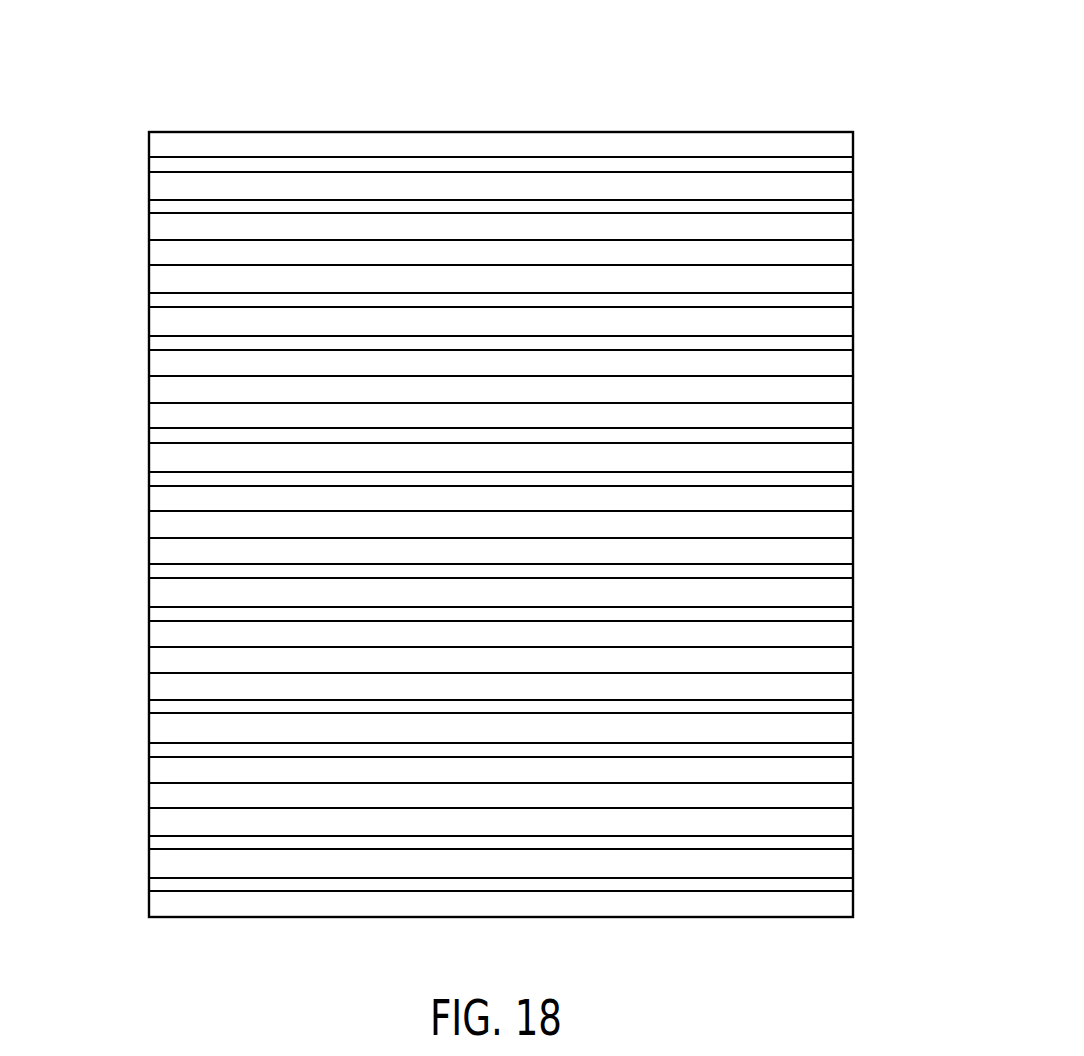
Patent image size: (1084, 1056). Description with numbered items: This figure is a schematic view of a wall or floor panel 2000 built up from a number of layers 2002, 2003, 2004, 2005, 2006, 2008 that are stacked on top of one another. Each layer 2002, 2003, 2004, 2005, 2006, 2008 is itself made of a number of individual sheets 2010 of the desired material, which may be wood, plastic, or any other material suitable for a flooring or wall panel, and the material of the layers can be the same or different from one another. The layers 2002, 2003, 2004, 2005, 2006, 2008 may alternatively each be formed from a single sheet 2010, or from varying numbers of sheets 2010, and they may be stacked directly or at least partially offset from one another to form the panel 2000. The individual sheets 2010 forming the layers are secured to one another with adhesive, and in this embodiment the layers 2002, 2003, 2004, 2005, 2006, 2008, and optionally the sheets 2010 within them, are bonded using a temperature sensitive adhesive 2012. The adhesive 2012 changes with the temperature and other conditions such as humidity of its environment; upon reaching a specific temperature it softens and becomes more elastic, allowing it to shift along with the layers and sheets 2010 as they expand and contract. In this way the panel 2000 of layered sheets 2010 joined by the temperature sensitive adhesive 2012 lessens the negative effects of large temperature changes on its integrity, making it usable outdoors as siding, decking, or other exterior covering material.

The panel 2000 is at (509, 113).
The layer 2002 is at (142, 135).
The layer 2003 is at (142, 268).
The layer 2004 is at (142, 406).
The layer 2005 is at (142, 541).
The layer 2006 is at (142, 676).
The layer 2008 is at (142, 811).
The individual sheets 2010 is at (825, 143).
The temperature sensitive adhesive 2012 is at (199, 209).